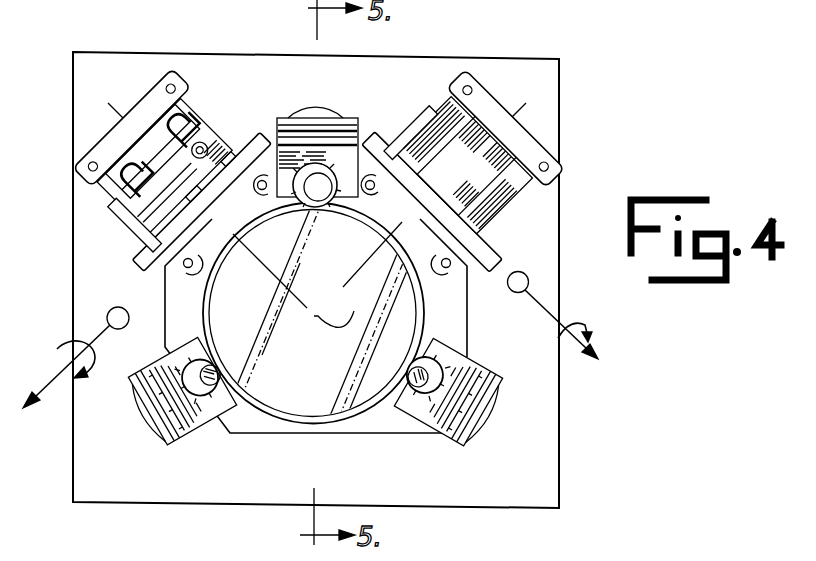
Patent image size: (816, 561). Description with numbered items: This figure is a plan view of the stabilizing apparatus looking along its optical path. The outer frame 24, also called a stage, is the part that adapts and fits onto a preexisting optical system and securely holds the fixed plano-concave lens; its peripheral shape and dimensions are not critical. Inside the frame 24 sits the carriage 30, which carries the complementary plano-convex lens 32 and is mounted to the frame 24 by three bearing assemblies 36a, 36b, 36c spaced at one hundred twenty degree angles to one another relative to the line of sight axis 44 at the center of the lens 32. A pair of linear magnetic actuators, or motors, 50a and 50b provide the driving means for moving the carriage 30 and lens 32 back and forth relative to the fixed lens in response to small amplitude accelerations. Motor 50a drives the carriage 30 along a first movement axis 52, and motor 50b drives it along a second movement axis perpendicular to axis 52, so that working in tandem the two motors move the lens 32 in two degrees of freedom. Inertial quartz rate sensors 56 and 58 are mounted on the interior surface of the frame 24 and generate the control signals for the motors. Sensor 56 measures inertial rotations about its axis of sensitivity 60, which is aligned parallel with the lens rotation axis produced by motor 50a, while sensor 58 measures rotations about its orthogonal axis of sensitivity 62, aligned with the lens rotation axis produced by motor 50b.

The frame 24 is at (533, 84).
The carriage 30 is at (458, 317).
The plano-convex lens 32 is at (348, 277).
The bearing assembly 36a is at (228, 372).
The bearing assembly 36b is at (412, 392).
The bearing assembly 36c is at (372, 136).
The line of sight axis 44 is at (341, 304).
The linear magnetic actuator 50a is at (258, 96).
The linear magnetic actuator 50b is at (417, 121).
The first movement axis 52 is at (290, 274).
The quartz rate sensor 56 is at (124, 308).
The quartz rate sensor 58 is at (545, 250).
The axis of sensitivity 60 is at (56, 379).
The axis of sensitivity 62 is at (552, 308).